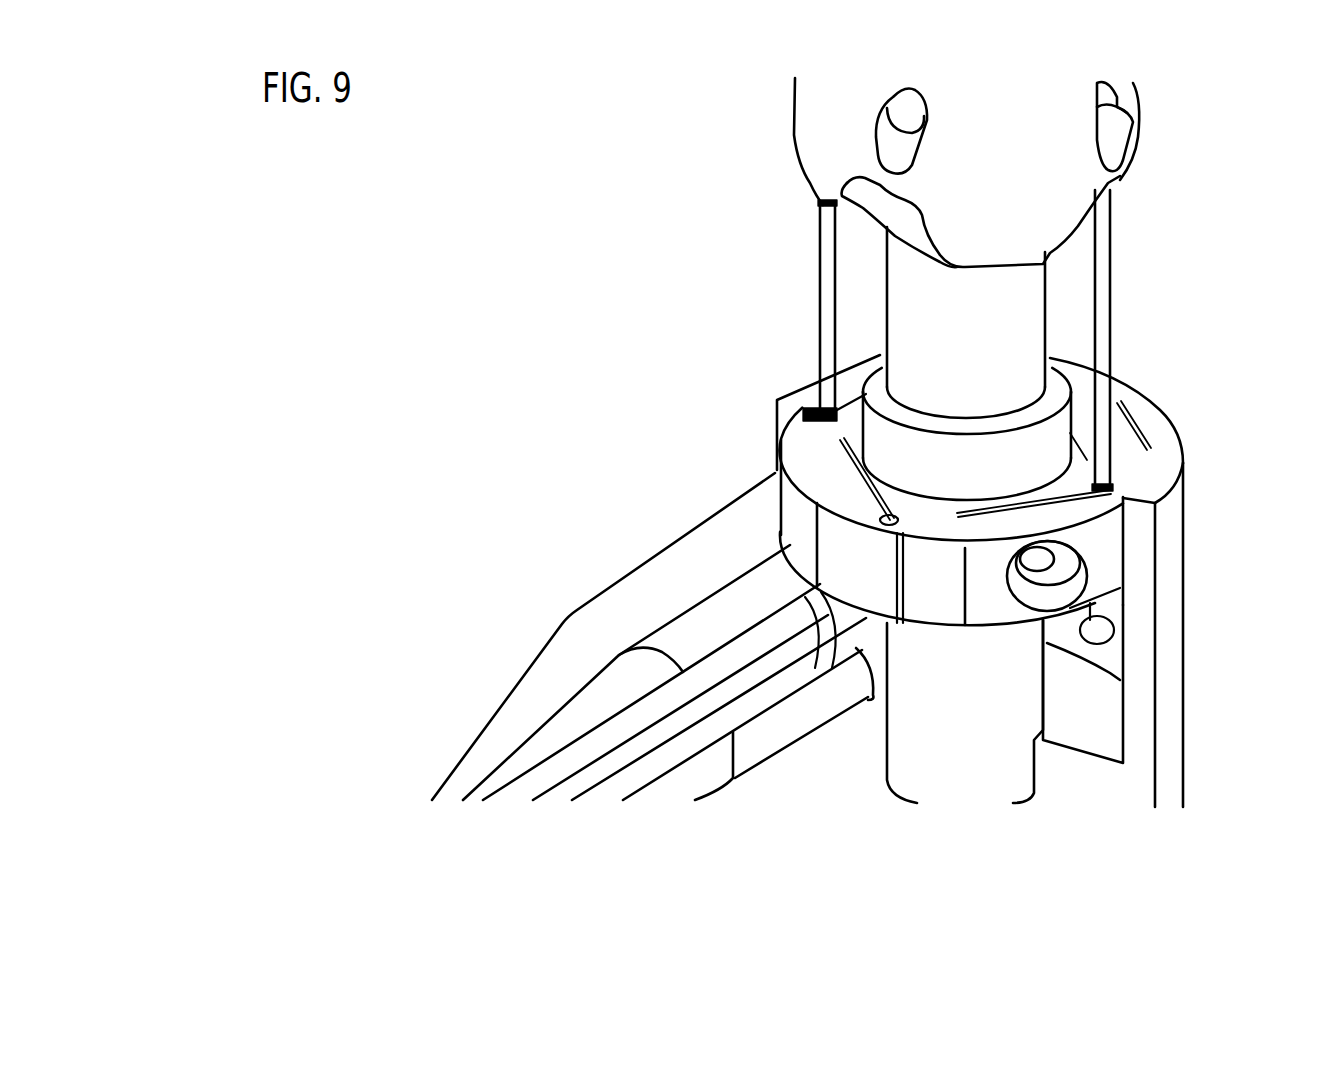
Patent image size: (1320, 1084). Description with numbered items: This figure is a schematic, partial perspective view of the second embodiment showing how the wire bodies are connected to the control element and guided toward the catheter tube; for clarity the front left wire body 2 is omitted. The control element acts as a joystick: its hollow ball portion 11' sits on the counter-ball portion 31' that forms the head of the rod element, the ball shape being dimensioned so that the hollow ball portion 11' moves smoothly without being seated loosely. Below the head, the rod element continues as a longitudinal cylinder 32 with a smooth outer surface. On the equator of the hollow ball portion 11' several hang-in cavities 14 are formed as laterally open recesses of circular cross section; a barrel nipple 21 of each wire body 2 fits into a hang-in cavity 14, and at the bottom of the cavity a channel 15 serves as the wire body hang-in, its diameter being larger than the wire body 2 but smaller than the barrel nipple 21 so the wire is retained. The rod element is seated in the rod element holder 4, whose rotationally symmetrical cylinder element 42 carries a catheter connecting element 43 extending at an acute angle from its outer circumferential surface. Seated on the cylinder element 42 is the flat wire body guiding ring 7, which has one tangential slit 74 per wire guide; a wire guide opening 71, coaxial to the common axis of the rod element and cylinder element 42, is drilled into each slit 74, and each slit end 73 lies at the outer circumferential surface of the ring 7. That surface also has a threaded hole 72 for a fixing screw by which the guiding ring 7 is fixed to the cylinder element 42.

The hollow ball portion 11' is at (751, 141).
The hang-in cavity 14 is at (910, 103).
The channel (wire body hang-in) 15 is at (880, 185).
The barrel nipple 21 is at (1110, 141).
The counter-ball portion 31' is at (807, 310).
The wire body 2 is at (1105, 322).
The longitudinal cylinder 32 is at (1020, 305).
The wire body guiding ring 7 is at (812, 448).
The wire guide opening 71 is at (881, 521).
The threaded hole 72 is at (1067, 567).
The slit end 73 is at (903, 593).
The tangential slit 74 is at (1040, 499).
The rod element holder 4 is at (1168, 533).
The cylinder element 42 is at (1168, 638).
The catheter connecting element 43 is at (513, 718).